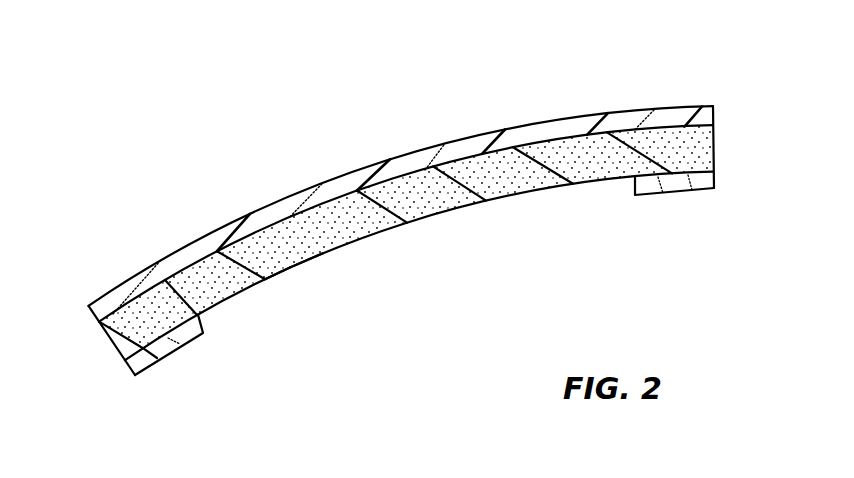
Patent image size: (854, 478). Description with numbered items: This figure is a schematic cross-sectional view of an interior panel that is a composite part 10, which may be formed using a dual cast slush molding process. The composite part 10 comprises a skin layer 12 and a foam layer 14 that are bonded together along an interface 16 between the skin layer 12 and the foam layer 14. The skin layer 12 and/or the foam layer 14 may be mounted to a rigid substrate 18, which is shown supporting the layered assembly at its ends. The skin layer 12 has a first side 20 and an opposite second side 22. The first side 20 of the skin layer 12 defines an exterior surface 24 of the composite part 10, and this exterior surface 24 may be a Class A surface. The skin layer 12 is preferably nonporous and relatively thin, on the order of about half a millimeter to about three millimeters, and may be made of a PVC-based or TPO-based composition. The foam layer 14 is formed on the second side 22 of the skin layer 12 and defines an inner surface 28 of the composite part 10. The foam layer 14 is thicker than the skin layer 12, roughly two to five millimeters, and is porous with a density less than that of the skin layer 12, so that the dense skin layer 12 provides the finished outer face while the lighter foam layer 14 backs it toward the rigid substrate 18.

The composite part 10 is at (311, 157).
The skin layer 12 is at (426, 165).
The foam layer 14 is at (390, 235).
The interface 16 is at (513, 148).
The rigid substrate 18 is at (170, 354).
The first side 20 is at (213, 230).
The second side 22 is at (497, 203).
The exterior surface 24 is at (653, 107).
The inner surface 28 is at (290, 274).